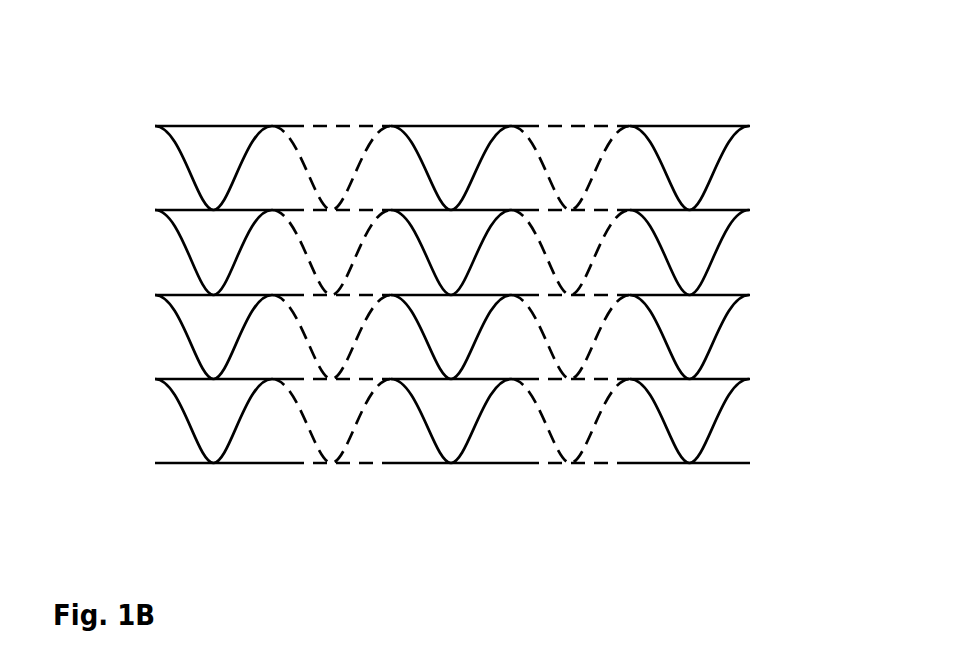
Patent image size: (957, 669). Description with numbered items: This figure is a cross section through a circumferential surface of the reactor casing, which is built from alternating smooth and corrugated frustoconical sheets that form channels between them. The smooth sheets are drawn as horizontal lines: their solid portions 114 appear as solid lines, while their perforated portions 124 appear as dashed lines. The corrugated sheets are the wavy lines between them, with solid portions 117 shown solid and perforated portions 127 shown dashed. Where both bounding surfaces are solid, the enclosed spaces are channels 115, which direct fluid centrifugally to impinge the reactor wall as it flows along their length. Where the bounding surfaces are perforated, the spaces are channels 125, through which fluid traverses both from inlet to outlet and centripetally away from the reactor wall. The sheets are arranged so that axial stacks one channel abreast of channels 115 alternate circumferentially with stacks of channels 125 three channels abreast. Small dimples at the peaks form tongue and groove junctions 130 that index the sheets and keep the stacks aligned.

The solid portions of the smooth sheets 114 is at (190, 120).
The channels enclosed by solid surfaces 115 is at (448, 158).
The solid portions of the corrugated sheets 117 is at (182, 258).
The perforated portions of the smooth sheets 124 is at (545, 470).
The channels partially enclosed by perforated surfaces 125 is at (512, 171).
The perforated portions of the corrugated sheets 127 is at (607, 412).
The tongue and groove junctions 130 is at (275, 118).